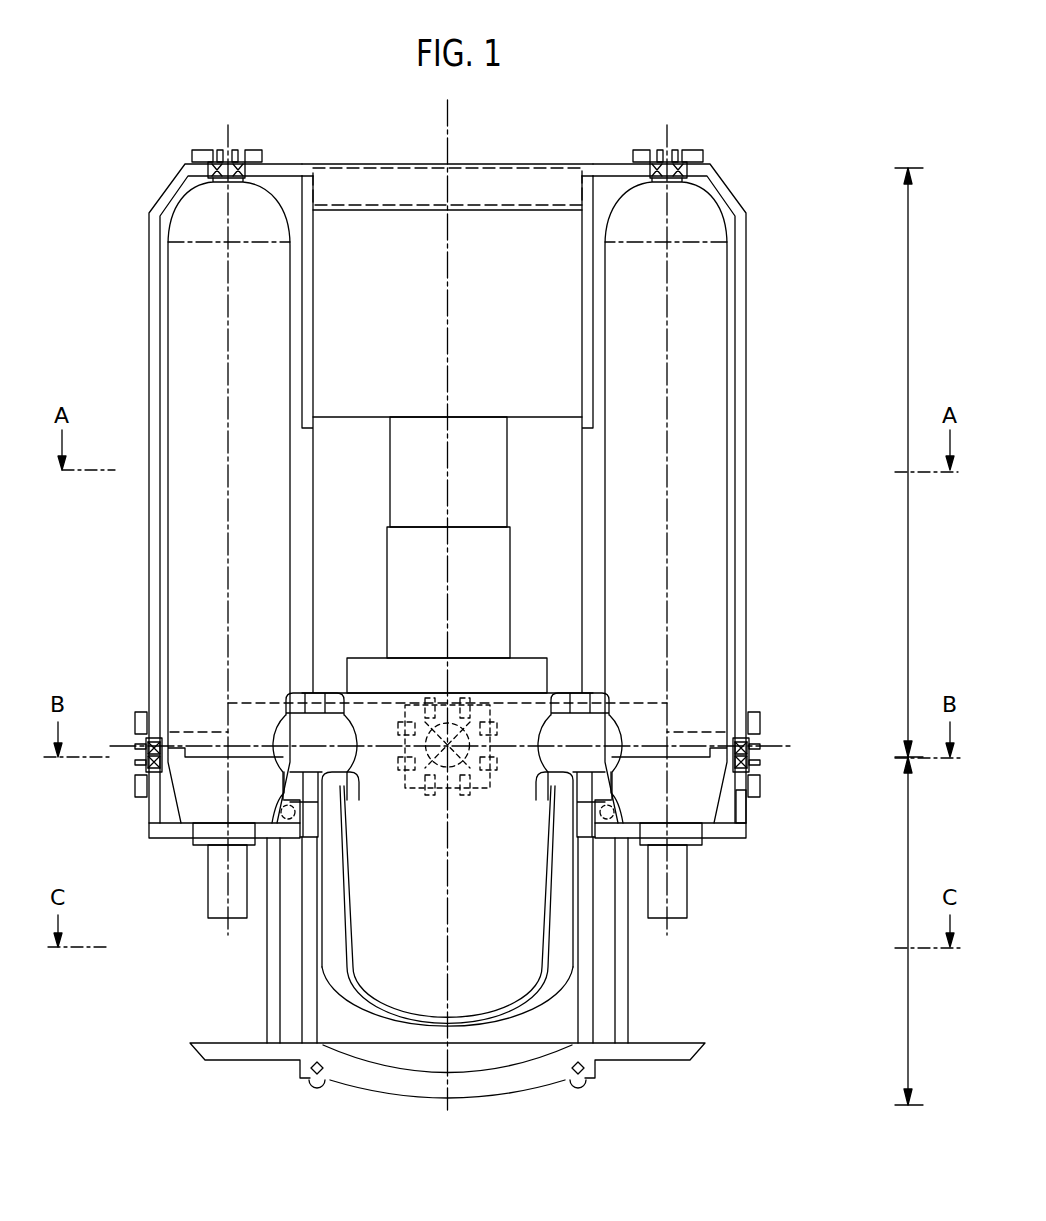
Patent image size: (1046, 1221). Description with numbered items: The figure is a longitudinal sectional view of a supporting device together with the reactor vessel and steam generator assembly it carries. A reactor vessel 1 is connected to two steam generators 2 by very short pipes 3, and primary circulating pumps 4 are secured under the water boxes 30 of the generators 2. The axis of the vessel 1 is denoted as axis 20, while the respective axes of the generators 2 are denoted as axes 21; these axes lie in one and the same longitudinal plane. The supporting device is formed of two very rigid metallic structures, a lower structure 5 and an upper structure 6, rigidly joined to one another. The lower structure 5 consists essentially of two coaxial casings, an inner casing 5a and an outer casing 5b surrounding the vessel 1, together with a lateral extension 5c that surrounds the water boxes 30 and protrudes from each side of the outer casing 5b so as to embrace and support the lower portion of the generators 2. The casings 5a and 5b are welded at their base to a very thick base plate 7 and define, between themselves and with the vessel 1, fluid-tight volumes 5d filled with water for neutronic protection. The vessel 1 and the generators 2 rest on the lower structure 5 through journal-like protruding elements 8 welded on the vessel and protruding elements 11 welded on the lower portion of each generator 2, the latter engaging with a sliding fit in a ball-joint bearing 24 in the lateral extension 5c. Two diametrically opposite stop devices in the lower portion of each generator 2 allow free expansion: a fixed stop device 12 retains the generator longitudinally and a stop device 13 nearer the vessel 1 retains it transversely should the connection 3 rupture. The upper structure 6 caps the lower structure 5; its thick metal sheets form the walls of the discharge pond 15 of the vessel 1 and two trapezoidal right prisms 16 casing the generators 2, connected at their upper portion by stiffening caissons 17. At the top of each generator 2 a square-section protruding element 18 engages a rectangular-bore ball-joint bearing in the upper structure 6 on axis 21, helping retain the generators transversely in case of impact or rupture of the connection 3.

The reactor vessel 1 is at (483, 965).
The steam generators 2 is at (190, 600).
The pipes 3 is at (300, 736).
The primary circulating pumps 4 is at (215, 866).
The lower structure 5 is at (909, 872).
The inner casing 5a is at (585, 1006).
The outer casing 5b is at (622, 948).
The lateral extension 5c is at (746, 812).
The fluid-tight volumes 5d is at (325, 973).
The upper structure 6 is at (909, 382).
The base plate 7 is at (660, 1055).
The protruding elements 8 is at (415, 795).
The protruding element 11 is at (147, 757).
The stop device 12 is at (165, 826).
The stop device 13 is at (290, 818).
The discharge pond 15 is at (565, 550).
The right prisms 16 is at (160, 373).
The caissons 17 is at (541, 185).
The protruding element 18 is at (220, 160).
The axis of the vessel 20 is at (455, 302).
The axes of the generators 21 is at (232, 376).
The ball-joint bearing 24 is at (147, 748).
The water boxes 30 is at (205, 815).